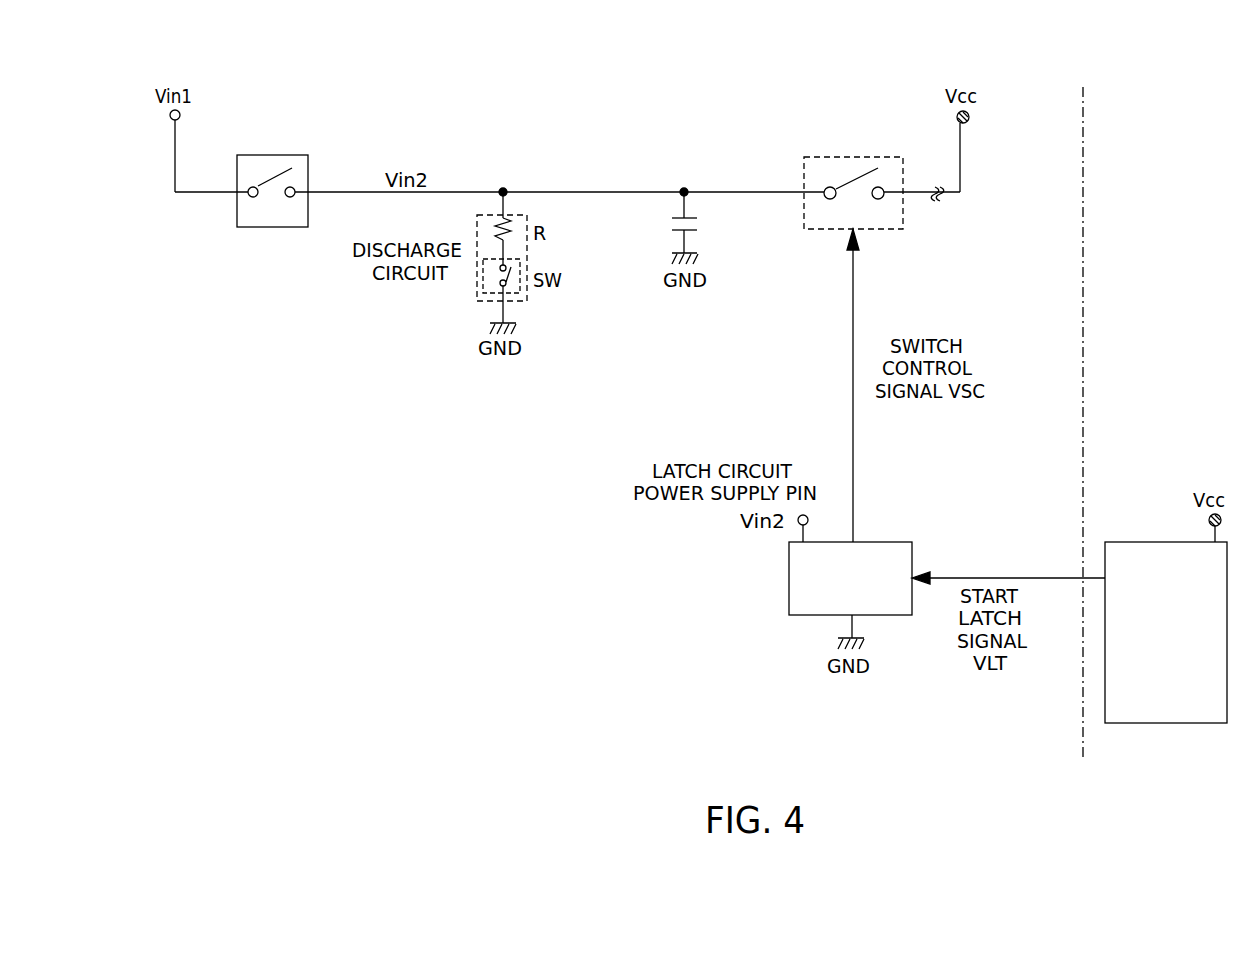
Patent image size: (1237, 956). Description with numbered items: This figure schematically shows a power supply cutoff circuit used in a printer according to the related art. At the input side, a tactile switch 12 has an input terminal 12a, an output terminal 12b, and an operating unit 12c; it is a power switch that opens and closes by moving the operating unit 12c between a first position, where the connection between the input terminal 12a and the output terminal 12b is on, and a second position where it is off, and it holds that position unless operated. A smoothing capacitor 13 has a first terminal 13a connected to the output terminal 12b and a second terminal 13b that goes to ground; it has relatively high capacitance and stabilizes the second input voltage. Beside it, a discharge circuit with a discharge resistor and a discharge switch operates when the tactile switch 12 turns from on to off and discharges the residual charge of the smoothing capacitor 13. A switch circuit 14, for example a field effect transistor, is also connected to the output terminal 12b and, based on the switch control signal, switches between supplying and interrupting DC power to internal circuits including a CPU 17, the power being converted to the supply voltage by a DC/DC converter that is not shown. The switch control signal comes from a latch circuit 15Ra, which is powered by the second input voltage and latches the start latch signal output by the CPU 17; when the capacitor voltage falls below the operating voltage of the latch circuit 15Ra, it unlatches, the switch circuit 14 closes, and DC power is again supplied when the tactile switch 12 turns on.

The tactile switch 12 is at (285, 180).
The input terminal 12a is at (255, 186).
The output terminal 12b is at (291, 186).
The operating unit 12c is at (278, 171).
The smoothing capacitor 13 is at (672, 224).
The first terminal 13a is at (673, 207).
The second terminal 13b is at (675, 238).
The switch circuit 14 is at (802, 165).
The latch circuit 15Ra is at (913, 553).
The CPU 17 is at (1157, 542).